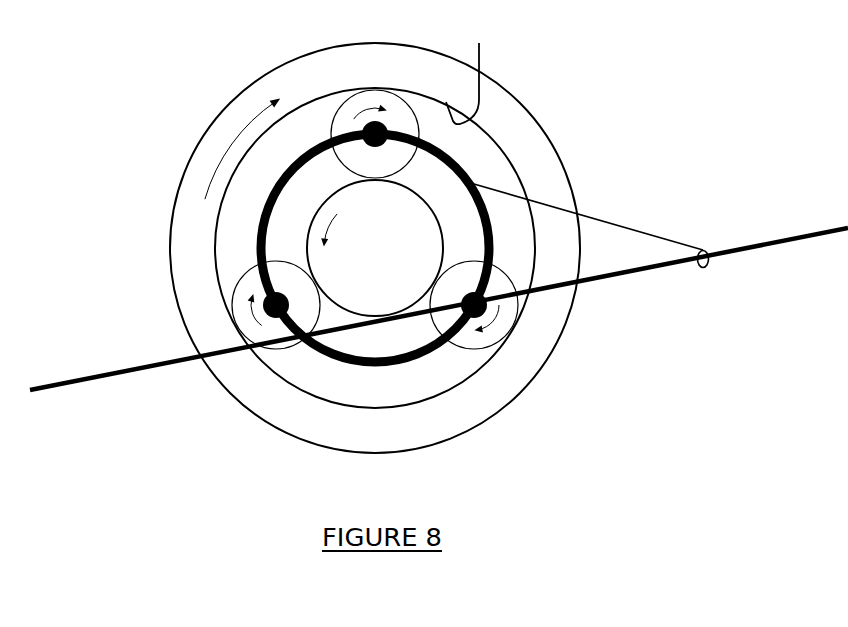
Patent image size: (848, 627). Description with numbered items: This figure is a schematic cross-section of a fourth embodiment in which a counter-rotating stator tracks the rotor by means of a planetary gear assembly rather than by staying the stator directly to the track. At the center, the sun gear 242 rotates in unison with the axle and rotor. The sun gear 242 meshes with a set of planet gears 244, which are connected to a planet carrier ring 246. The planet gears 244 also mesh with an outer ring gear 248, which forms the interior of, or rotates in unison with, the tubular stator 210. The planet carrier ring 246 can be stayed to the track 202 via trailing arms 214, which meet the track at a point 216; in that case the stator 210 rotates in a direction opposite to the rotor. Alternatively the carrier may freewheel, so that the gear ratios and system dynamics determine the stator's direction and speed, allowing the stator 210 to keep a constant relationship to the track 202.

The track 202 is at (115, 368).
The stator 210 is at (522, 100).
The trailing arms 214 is at (622, 222).
The pivot point 216 is at (705, 251).
The sun gear 242 is at (352, 258).
The planet gears 244 is at (362, 103).
The planet carrier ring 246 is at (281, 184).
The outer ring gear 248 is at (472, 69).